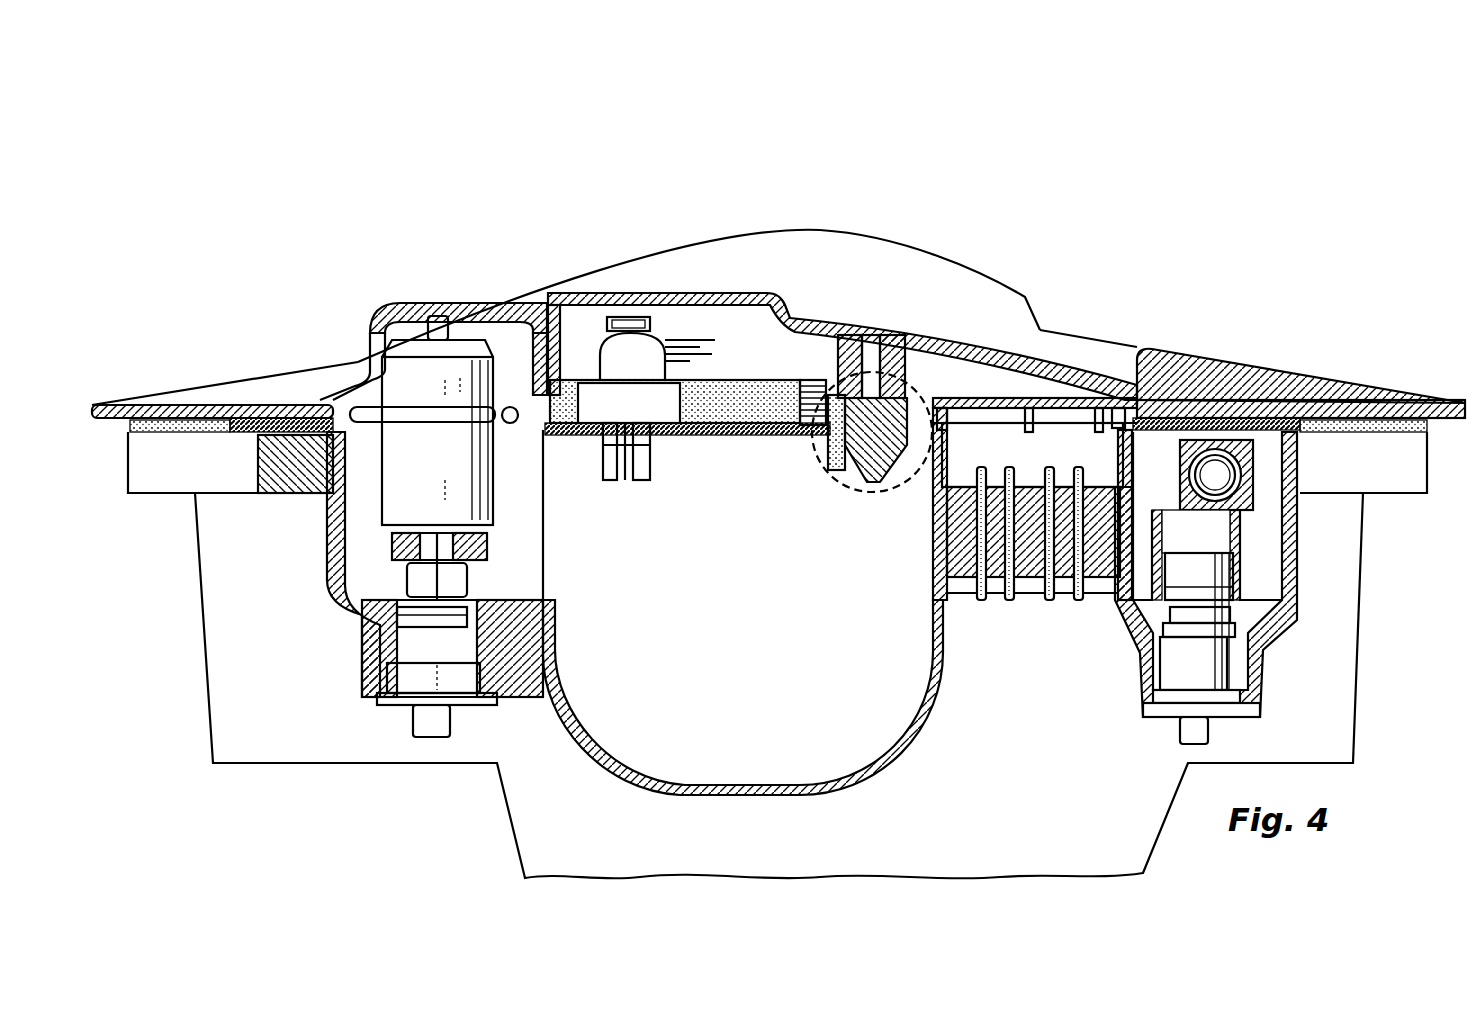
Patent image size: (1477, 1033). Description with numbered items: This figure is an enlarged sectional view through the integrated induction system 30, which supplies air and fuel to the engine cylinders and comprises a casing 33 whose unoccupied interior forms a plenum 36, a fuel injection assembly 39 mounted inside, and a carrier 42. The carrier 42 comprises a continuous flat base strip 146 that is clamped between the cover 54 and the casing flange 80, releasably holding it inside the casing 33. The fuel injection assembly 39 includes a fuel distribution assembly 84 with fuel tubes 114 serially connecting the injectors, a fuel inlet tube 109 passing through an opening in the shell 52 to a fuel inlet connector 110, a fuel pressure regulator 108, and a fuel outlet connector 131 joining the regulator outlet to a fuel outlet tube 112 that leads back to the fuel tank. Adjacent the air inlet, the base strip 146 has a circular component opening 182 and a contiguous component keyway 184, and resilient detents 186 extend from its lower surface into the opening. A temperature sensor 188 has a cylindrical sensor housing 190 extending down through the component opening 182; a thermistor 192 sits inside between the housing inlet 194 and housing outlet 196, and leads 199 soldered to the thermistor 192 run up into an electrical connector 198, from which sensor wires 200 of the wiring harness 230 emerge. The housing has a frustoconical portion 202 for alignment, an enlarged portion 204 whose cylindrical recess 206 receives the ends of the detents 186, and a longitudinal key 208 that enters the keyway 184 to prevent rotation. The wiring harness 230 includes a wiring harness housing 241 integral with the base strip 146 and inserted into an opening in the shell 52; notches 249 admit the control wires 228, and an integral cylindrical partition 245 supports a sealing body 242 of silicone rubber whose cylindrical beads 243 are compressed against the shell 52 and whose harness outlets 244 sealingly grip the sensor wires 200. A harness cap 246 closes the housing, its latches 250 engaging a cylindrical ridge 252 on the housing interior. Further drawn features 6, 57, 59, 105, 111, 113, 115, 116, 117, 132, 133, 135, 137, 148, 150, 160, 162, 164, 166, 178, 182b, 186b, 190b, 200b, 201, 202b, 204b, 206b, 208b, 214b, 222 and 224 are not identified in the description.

The detail circle 6 is at (815, 490).
The integrated induction system 30 is at (1000, 230).
The casing 33 is at (1240, 345).
The plenum 36 is at (625, 705).
The fuel injection assembly 39 is at (375, 510).
The carrier 42 is at (715, 430).
The shell 52 is at (1280, 640).
The cover 54 is at (770, 232).
The vent valve 57 is at (440, 316).
The vent opening 59 is at (455, 320).
The casing flange 80 is at (128, 480).
The fuel distribution assembly 84 is at (1258, 537).
The reservoir bottom 105 is at (720, 690).
The fuel pressure regulator 108 is at (500, 505).
The fuel inlet tube 109 is at (1178, 740).
The fuel inlet connector 110 is at (1140, 680).
The valve member 111 is at (1225, 663).
The fuel outlet tube 112 is at (430, 737).
The outlet passage 113 is at (1175, 500).
The fuel tubes 114 is at (1258, 415).
The retainer plate 115 is at (1250, 700).
The valve piston 116 is at (1240, 590).
The valve seat 117 is at (1165, 640).
The fuel outlet connector 131 is at (380, 640).
The inlet cap 132 is at (395, 670).
The seal ring 133 is at (468, 615).
The coupling 135 is at (400, 560).
The flange 137 is at (485, 683).
The base strip 146 is at (1370, 418).
The seal strip 148 is at (1300, 418).
The gasket 150 is at (290, 425).
The pump cover 160 is at (355, 400).
The mounting block 162 is at (310, 480).
The O-ring 164 is at (490, 495).
The fuel pump 166 is at (423, 415).
The circuit board 178 is at (748, 375).
The component opening 182 is at (900, 350).
The conductor pad 182b is at (600, 440).
The component keyway 184 is at (795, 400).
The resilient detents 186 is at (957, 504).
The wall 186b is at (650, 500).
The temperature sensor 188 is at (880, 470).
The sensor housing 190 is at (885, 445).
The clip 190b is at (585, 335).
The thermistor 192 is at (900, 470).
The housing inlet 194 is at (880, 480).
The housing outlet 196 is at (905, 490).
The electrical connector 198 is at (868, 335).
The leads 199 is at (876, 335).
The sensor wires 200 is at (945, 370).
The connector body 200b is at (680, 335).
The connector cover 201 is at (975, 395).
The frustoconical portion 202 is at (835, 470).
The insulator 202b is at (655, 478).
The enlarged portion 204 is at (930, 395).
The terminal post 204b is at (605, 440).
The cylindrical recess 206 is at (830, 440).
The terminal sleeve 206b is at (620, 470).
The longitudinal key 208 is at (855, 470).
The seal 208b is at (640, 478).
The terminal prongs 214b is at (690, 350).
The relay 222 is at (600, 335).
The threaded stud 224 is at (815, 380).
The control wires 228 is at (820, 340).
The wiring harness 230 is at (1110, 398).
The wiring harness housing 241 is at (912, 470).
The sealing body 242 is at (925, 470).
The cylindrical beads 243 is at (1135, 565).
The harness outlets 244 is at (1000, 590).
The cylindrical partition 245 is at (1063, 442).
The harness cap 246 is at (1050, 398).
The notches 249 is at (1095, 398).
The latches 250 is at (1030, 385).
The cylindrical ridge 252 is at (1140, 398).